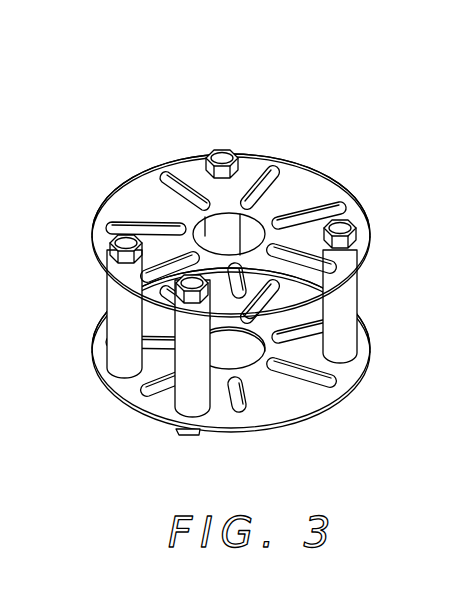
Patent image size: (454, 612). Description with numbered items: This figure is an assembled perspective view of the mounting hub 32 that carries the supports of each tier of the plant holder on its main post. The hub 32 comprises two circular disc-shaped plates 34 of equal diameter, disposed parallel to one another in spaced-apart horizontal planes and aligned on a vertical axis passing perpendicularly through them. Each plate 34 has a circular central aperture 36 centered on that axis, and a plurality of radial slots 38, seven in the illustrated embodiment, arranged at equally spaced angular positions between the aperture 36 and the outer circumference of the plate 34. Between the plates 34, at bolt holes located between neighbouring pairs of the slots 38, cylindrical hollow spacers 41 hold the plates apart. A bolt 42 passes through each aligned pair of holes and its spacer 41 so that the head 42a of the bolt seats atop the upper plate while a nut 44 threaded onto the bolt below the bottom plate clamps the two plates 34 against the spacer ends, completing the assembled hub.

The mounting hub 32 is at (251, 272).
The plate 34 is at (269, 283).
The central aperture 36 is at (252, 212).
The radial slot 38 is at (143, 225).
The cylindrical hollow spacer 41 is at (342, 306).
The bolt 42 is at (228, 148).
The head of the bolt 42a is at (343, 226).
The nut 44 is at (185, 431).